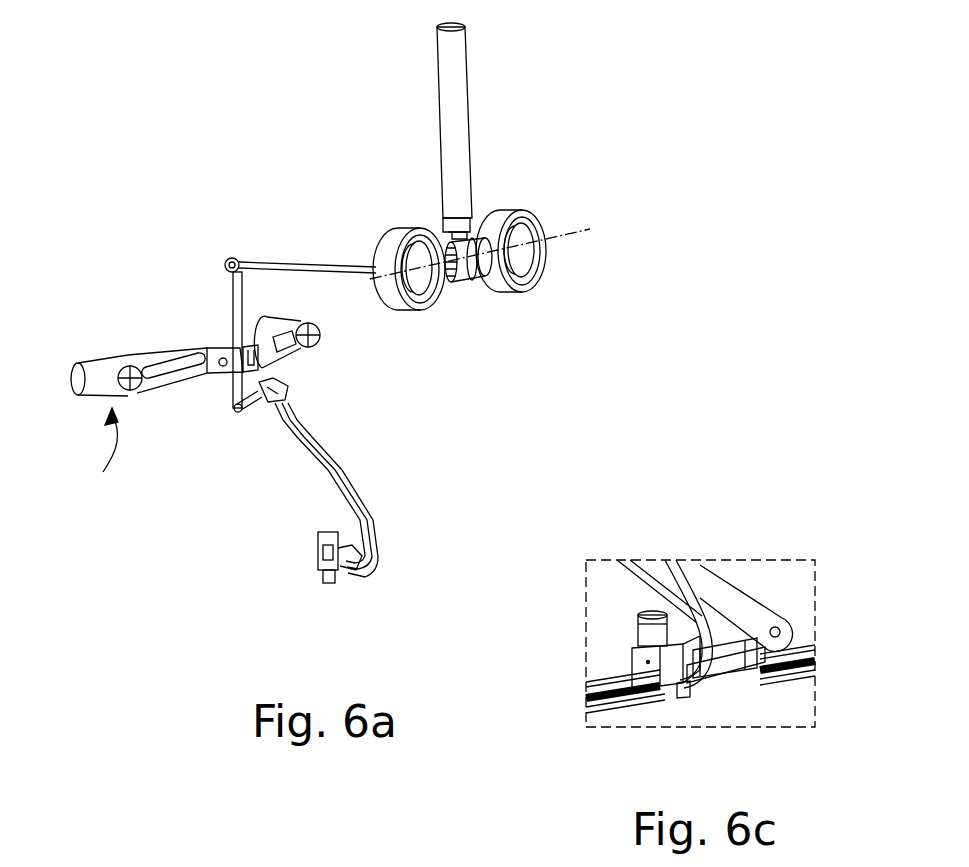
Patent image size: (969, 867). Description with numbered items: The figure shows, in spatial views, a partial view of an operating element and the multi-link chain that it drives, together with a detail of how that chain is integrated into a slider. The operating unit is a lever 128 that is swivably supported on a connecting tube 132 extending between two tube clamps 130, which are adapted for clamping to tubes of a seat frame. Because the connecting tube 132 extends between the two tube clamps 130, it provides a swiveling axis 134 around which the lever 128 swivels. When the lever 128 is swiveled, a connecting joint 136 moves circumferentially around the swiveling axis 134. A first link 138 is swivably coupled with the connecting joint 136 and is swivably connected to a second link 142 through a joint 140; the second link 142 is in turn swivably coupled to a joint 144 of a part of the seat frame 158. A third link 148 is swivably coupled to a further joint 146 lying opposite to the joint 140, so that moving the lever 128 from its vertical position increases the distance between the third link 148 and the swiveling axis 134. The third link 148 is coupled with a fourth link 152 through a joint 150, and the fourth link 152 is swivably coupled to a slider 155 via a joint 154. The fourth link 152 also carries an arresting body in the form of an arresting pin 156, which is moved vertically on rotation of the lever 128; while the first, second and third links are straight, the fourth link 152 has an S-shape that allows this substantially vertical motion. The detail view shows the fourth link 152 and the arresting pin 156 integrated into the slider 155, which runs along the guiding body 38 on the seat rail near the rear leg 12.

In FIG. 6c, the rear leg 12 is at (785, 615).
In FIG. 6c, the guiding body 38 is at (598, 686).
In FIG. 6a, the lever 128 is at (462, 108).
In FIG. 6a, the tube clamps 130 is at (546, 256).
In FIG. 6a, the connecting tube 132 is at (450, 283).
In FIG. 6a, the swiveling axis 134 is at (574, 236).
In FIG. 6a, the connecting joint 136 is at (470, 273).
In FIG. 6a, the first link 138 is at (332, 266).
In FIG. 6a, the joint 140 is at (229, 259).
In FIG. 6a, the second link 142 is at (232, 318).
In FIG. 6a, the joint 144 is at (205, 378).
In FIG. 6a, the further joint 146 is at (236, 412).
In FIG. 6a, the third link 148 is at (262, 410).
In FIG. 6a, the joint 150 is at (287, 386).
In FIG. 6a, the fourth link 152 is at (343, 471).
In FIG. 6c, the fourth link 152 is at (684, 575).
In FIG. 6a, the joint 154 is at (347, 577).
In FIG. 6c, the joint 154 is at (667, 662).
In FIG. 6c, the slider 155 is at (743, 672).
In FIG. 6a, the arresting pin 156 is at (318, 562).
In FIG. 6c, the arresting pin 156 is at (633, 617).
In FIG. 6a, the part of the seat frame 158 is at (108, 456).